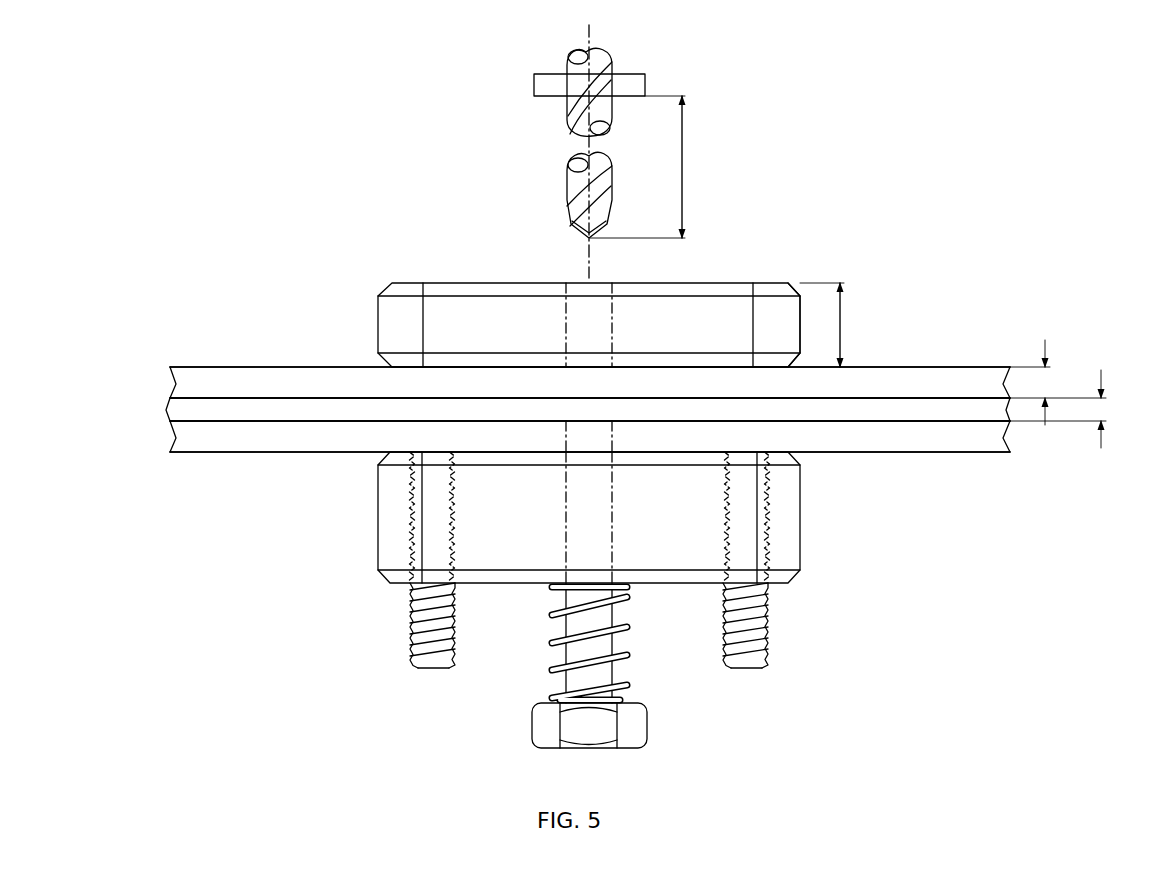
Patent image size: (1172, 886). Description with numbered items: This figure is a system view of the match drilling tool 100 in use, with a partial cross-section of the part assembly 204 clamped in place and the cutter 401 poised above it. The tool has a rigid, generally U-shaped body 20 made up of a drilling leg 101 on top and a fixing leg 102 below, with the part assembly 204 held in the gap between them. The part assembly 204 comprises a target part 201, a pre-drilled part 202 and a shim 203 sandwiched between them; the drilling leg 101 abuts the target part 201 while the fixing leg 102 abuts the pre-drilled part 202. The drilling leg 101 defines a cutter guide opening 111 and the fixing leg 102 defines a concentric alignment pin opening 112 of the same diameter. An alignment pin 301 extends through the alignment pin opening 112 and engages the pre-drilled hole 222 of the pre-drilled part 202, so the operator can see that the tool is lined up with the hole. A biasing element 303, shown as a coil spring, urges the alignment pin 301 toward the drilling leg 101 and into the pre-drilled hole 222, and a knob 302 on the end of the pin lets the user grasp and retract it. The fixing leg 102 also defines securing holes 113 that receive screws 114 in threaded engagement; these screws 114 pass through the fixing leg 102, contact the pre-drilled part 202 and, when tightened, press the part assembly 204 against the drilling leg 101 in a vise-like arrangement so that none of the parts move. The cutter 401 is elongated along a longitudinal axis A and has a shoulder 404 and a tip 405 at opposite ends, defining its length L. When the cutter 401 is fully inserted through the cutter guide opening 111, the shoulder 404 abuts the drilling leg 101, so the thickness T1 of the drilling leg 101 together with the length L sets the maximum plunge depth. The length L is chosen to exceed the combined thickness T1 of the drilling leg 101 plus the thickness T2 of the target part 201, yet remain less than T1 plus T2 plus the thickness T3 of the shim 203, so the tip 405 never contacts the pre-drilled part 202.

The match drilling tool 100 is at (350, 584).
The drilling leg 101 is at (706, 283).
The fixing leg 102 is at (790, 583).
The cutter guide opening 111 is at (566, 330).
The alignment pin opening 112 is at (566, 506).
The securing holes 113 is at (454, 533).
The screws 114 is at (410, 648).
The body 20 is at (792, 283).
The target part 201 is at (948, 367).
The pre-drilled part 202 is at (880, 455).
The shim 203 is at (946, 414).
The part assembly 204 is at (160, 365).
The pre-drilled hole 222 is at (566, 442).
The alignment pin 301 is at (566, 688).
The knob 302 is at (532, 726).
The biasing element 303 is at (628, 660).
The cutter 401 is at (568, 192).
The shoulder 404 is at (534, 84).
The tip 405 is at (570, 228).
The longitudinal axis A is at (592, 40).
The length of the cutter L is at (682, 176).
The thickness of the drilling leg T1 is at (840, 328).
The thickness of the target part T2 is at (1045, 380).
The thickness of the shim T3 is at (1101, 410).